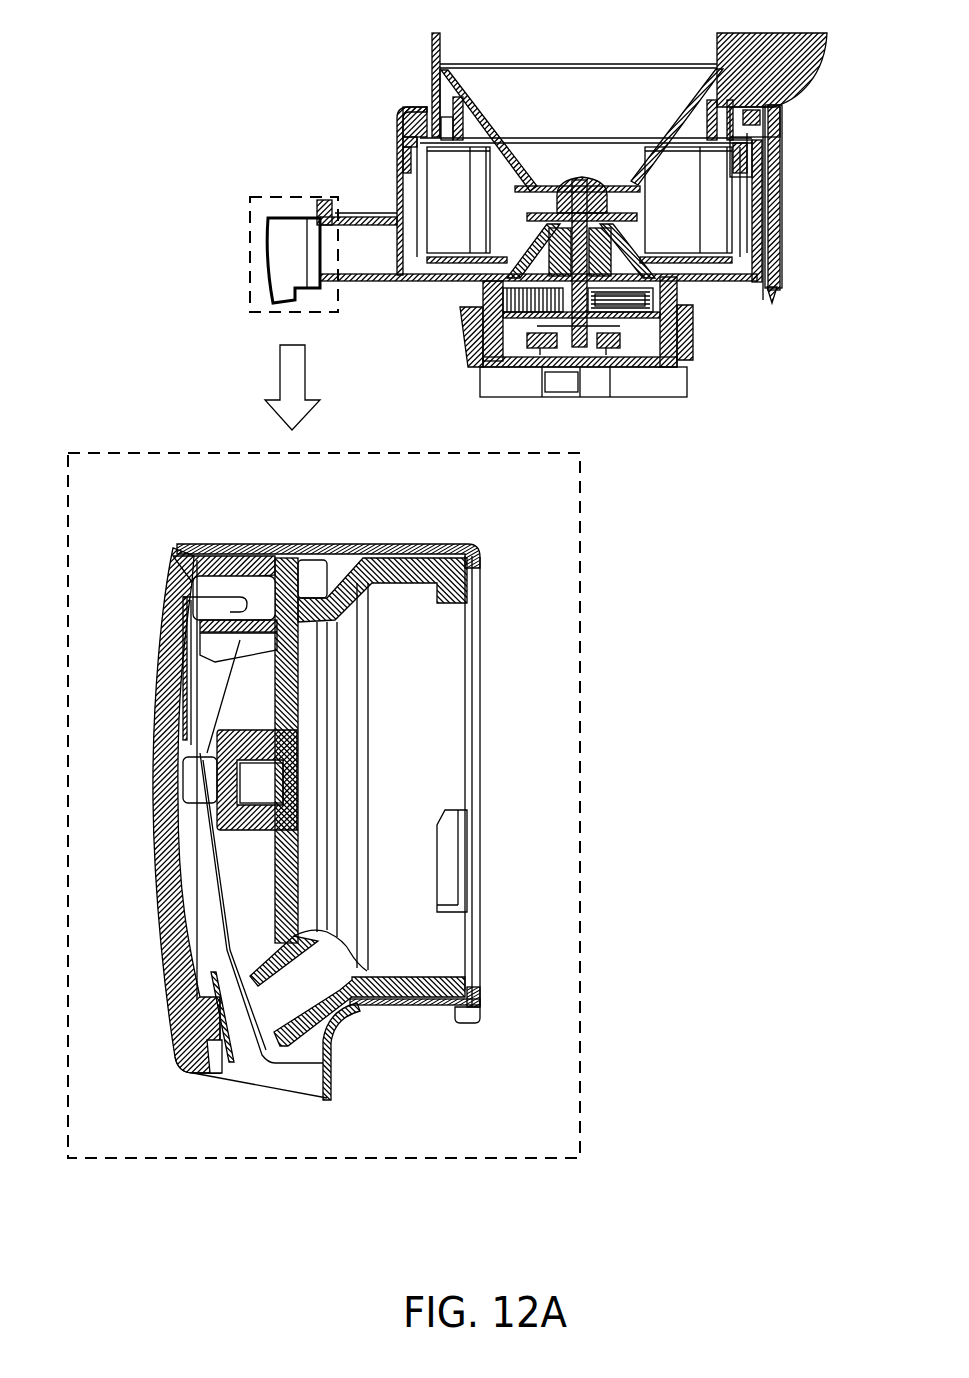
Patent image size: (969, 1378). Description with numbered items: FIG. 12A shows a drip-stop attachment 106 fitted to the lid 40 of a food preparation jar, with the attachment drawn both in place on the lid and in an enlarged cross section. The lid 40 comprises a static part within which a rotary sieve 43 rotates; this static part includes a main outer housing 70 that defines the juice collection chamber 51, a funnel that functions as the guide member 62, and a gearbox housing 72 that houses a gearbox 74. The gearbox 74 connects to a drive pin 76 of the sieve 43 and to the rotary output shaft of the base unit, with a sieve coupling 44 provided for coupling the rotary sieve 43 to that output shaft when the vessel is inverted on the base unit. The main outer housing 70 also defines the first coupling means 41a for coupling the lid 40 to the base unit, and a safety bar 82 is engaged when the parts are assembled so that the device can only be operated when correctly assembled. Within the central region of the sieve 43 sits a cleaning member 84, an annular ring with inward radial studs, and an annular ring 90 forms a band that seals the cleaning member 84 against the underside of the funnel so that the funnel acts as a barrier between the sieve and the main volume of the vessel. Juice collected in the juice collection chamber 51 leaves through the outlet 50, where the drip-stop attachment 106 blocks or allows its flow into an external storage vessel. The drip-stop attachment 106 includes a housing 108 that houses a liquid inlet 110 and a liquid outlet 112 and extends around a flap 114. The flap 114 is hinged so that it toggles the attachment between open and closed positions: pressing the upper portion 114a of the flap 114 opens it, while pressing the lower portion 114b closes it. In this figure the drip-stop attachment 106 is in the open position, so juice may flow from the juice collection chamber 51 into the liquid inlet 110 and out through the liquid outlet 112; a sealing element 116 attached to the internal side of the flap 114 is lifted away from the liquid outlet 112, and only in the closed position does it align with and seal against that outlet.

The lid 40 is at (352, 110).
The main outer housing 70 is at (405, 107).
The guide member 62 is at (677, 95).
The annular ring 90 is at (462, 118).
The drive pin 76 is at (580, 210).
The juice collection chamber 51 is at (415, 192).
The cleaning member 84 is at (480, 228).
The gearbox 74 is at (531, 280).
The drip-stop attachment 106 is at (247, 242).
The outlet 50 is at (383, 282).
The safety bar 82 is at (767, 300).
The rotary sieve 43 is at (737, 233).
The gearbox housing 72 is at (533, 320).
The sieve coupling 44 is at (613, 350).
The first coupling means 41a is at (473, 370).
The housing 108 is at (330, 553).
The flap 114 is at (170, 932).
The upper portion 114a is at (163, 655).
The lower portion 114b is at (178, 1025).
The sealing element 116 is at (230, 1057).
The liquid outlet 112 is at (280, 1017).
The liquid inlet 110 is at (340, 953).